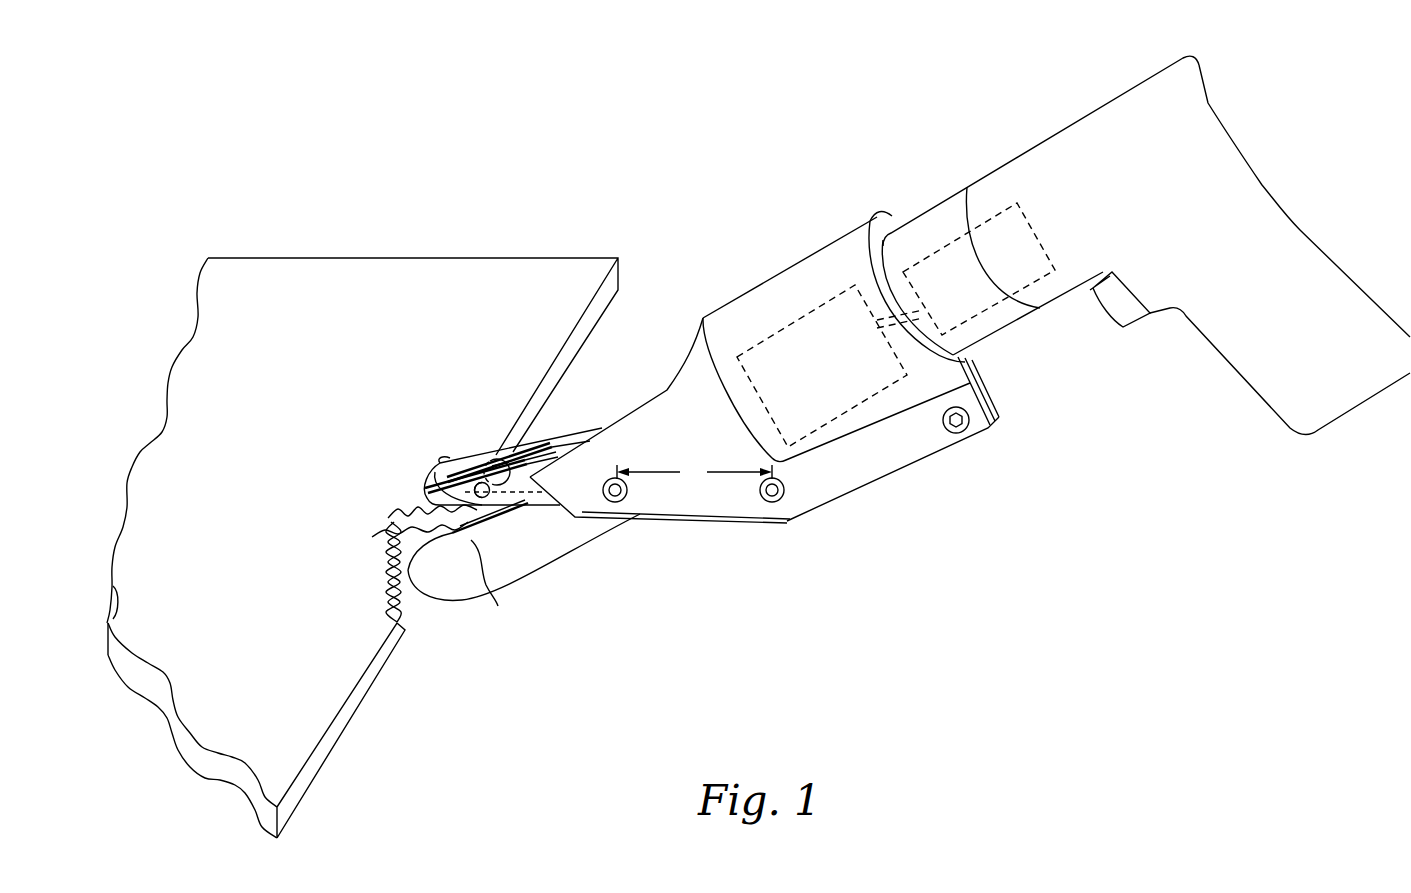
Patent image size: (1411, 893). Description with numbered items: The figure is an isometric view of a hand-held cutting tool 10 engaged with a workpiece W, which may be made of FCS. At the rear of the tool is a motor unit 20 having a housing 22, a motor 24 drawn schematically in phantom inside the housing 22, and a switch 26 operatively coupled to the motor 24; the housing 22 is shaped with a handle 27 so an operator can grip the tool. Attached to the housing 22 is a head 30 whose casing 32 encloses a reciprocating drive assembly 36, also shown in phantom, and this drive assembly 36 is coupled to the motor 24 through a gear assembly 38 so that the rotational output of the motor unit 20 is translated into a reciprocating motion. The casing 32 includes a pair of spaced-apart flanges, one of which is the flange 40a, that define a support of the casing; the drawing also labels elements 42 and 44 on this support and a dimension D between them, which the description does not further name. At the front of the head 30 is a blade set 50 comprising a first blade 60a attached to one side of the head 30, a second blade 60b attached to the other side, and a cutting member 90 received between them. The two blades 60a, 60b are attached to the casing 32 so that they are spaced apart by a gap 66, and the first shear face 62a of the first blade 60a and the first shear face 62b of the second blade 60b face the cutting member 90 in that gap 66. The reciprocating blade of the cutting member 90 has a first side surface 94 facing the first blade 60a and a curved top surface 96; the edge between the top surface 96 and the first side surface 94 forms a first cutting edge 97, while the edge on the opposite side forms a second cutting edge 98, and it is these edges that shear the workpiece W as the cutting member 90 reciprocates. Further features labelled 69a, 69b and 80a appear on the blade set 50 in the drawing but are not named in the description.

The workpiece W is at (420, 287).
The hand-held cutting tool 10 is at (938, 556).
The motor unit 20 is at (999, 168).
The housing 22 is at (1250, 362).
The motor 24 is at (945, 245).
The switch 26 is at (1128, 318).
The handle 27 is at (1277, 236).
The head 30 is at (814, 266).
The casing 32 is at (886, 214).
The reciprocating drive assembly 36 is at (787, 328).
The gear assembly 38 is at (905, 345).
The flange 40a is at (722, 500).
The bolt 42 is at (625, 500).
The bolt 44 is at (776, 500).
The blade set 50 is at (624, 330).
The first blade 60a is at (536, 510).
The second blade 60b is at (594, 438).
The first shear face of the first blade 62a is at (440, 465).
The first shear face of the second blade 62b is at (590, 432).
The gap 66 is at (558, 430).
The guide 69a is at (512, 450).
The guide hole 69b is at (465, 455).
The pivot pin 80a is at (474, 490).
The cutting member 90 is at (528, 580).
The first side surface 94 is at (526, 560).
The curved top surface 96 is at (456, 540).
The first cutting edge 97 is at (487, 586).
The second cutting edge 98 is at (392, 532).
The bolt spacing distance D is at (694, 472).